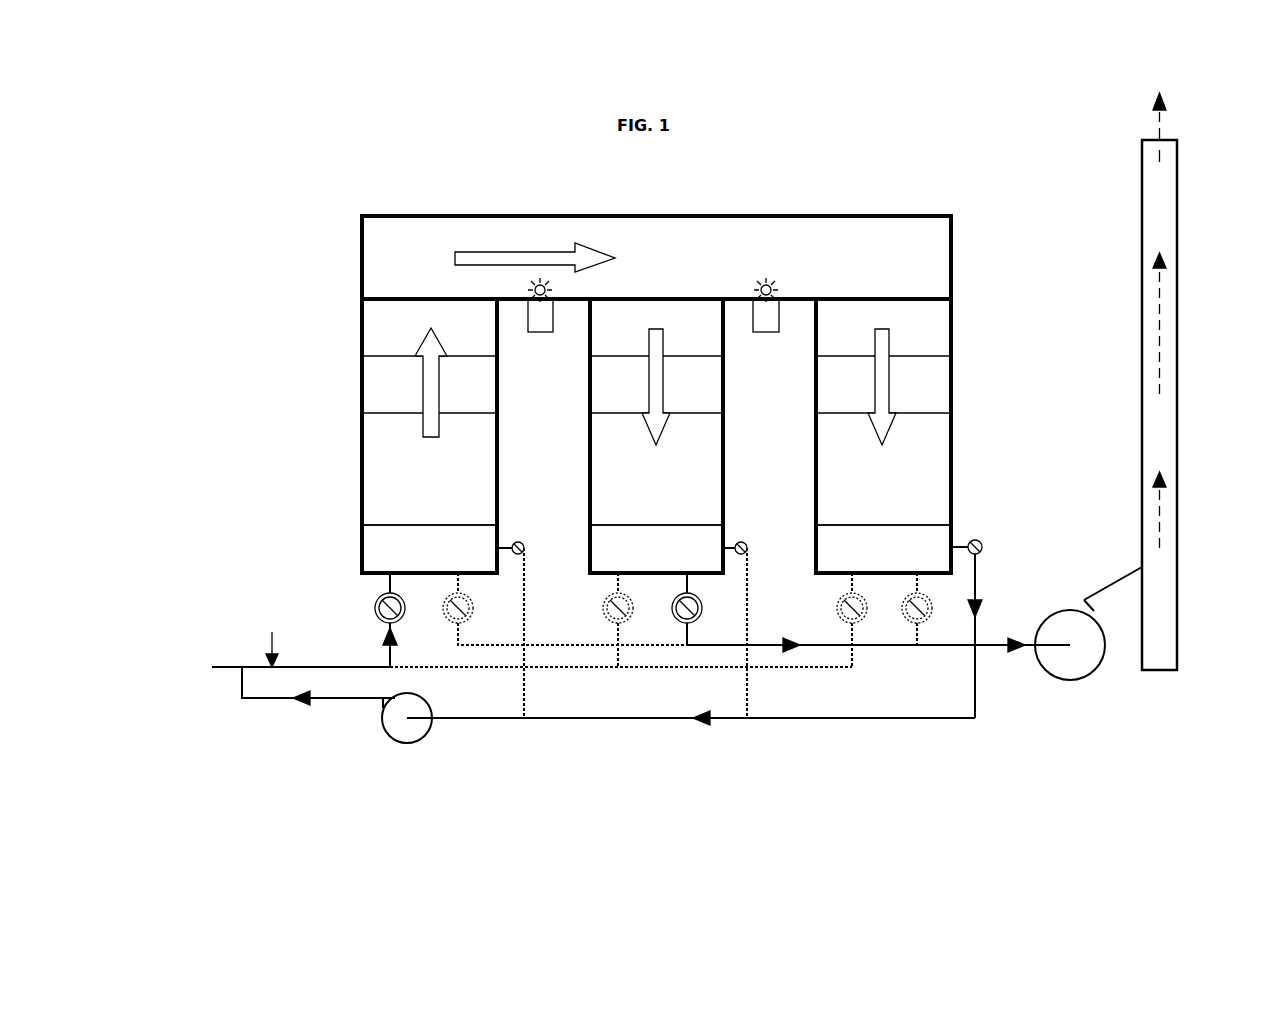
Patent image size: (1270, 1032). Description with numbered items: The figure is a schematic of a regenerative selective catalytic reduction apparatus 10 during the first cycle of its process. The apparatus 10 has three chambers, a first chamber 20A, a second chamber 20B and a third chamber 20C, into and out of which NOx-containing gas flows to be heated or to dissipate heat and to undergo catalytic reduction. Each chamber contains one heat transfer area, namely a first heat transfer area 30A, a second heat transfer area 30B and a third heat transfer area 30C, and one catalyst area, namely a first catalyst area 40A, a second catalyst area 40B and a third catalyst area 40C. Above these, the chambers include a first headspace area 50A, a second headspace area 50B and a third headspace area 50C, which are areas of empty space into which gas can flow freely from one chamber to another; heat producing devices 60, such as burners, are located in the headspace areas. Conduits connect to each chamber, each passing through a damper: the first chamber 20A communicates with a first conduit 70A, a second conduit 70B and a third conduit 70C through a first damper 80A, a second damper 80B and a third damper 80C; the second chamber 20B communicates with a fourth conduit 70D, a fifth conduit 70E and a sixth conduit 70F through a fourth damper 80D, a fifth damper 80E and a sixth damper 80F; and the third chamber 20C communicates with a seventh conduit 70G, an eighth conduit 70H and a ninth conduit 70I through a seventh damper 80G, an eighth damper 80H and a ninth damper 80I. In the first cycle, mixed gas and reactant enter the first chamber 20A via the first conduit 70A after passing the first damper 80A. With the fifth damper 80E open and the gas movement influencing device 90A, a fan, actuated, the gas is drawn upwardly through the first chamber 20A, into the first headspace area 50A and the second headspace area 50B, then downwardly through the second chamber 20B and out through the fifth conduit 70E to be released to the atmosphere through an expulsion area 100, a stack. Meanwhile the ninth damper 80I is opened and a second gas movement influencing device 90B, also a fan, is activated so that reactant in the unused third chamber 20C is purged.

The regenerative selective catalytic reduction apparatus 10 is at (350, 212).
The first chamber 20A is at (507, 373).
The second chamber 20B is at (732, 373).
The third chamber 20C is at (957, 368).
The first heat transfer area 30A is at (447, 465).
The second heat transfer area 30B is at (675, 465).
The third heat transfer area 30C is at (902, 465).
The first catalyst area 40A is at (447, 324).
The second catalyst area 40B is at (675, 324).
The third catalyst area 40C is at (902, 324).
The first headspace area 50A is at (440, 262).
The second headspace area 50B is at (670, 258).
The third headspace area 50C is at (873, 250).
The heat producing device 60 is at (752, 313).
The first conduit 70A is at (387, 664).
The second conduit 70B is at (456, 646).
The third conduit 70C is at (518, 703).
The fourth conduit 70D is at (614, 659).
The fifth conduit 70E is at (686, 637).
The sixth conduit 70F is at (744, 683).
The seventh conduit 70G is at (851, 676).
The eighth conduit 70H is at (915, 648).
The ninth conduit 70I is at (972, 709).
The first damper 80A is at (373, 603).
The second damper 80B is at (445, 597).
The third damper 80C is at (524, 549).
The fourth damper 80D is at (626, 597).
The fifth damper 80E is at (700, 598).
The sixth damper 80F is at (752, 541).
The seventh damper 80G is at (860, 599).
The eighth damper 80H is at (924, 598).
The ninth damper 80I is at (983, 547).
The gas movement influencing device 90A is at (381, 721).
The gas movement influencing device 90B is at (1080, 658).
The expulsion area 100 is at (1180, 136).